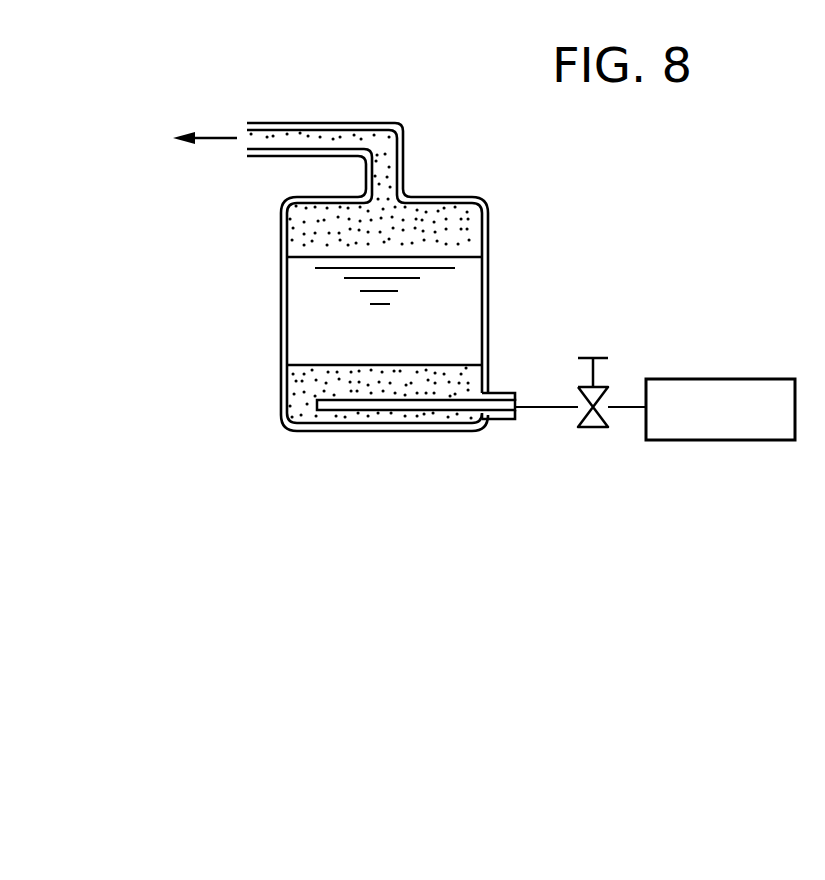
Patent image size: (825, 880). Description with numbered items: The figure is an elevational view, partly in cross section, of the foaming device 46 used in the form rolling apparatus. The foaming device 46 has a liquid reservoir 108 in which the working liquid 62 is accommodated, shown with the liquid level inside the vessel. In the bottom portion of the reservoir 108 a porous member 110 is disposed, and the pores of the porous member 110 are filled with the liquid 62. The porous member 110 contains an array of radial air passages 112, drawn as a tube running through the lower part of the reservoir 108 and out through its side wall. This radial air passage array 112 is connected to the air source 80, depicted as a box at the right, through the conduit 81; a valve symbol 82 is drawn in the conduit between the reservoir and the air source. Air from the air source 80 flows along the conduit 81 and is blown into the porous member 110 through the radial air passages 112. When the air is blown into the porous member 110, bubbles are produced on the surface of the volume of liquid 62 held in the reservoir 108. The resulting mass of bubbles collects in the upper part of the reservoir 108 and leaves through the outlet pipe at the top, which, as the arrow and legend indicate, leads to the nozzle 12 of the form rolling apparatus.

The nozzle 12 is at (137, 162).
The foaming device 46 is at (603, 281).
The working liquid 62 is at (307, 312).
The air source 80 is at (708, 432).
The conduit 81 is at (544, 407).
The valve 82 is at (593, 428).
The liquid reservoir 108 is at (488, 230).
The porous member 110 is at (304, 403).
The radial air passages 112 is at (414, 403).